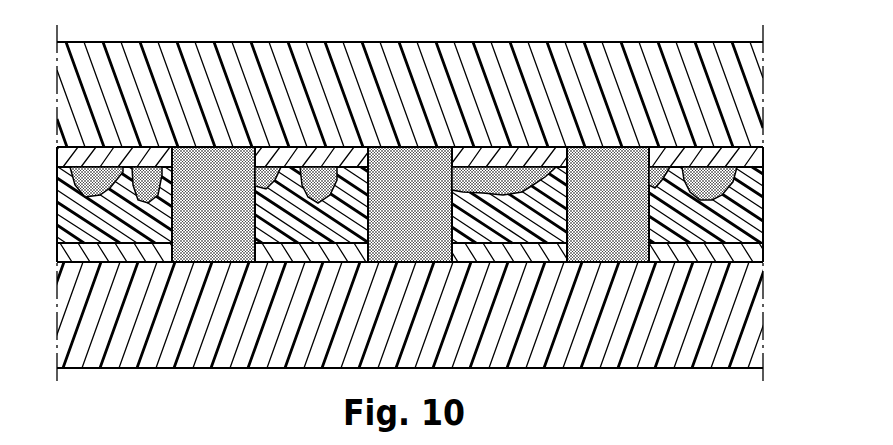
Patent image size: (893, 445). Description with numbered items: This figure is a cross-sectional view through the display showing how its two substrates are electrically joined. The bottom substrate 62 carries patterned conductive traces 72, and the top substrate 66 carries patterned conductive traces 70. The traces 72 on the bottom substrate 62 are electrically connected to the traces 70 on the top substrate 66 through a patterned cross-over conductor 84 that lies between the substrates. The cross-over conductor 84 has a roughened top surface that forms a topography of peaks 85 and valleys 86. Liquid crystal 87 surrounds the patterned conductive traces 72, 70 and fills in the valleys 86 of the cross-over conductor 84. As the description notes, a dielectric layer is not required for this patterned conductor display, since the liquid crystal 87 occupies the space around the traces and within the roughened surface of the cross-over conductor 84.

The bottom substrate 62 is at (722, 316).
The top substrate 66 is at (728, 99).
The patterned conductive traces 70 is at (518, 157).
The patterned conductive traces 72 is at (740, 252).
The patterned cross-over conductor 84 is at (743, 212).
The peaks 85 is at (60, 172).
The valleys 86 is at (317, 211).
The liquid crystal 87 is at (150, 183).